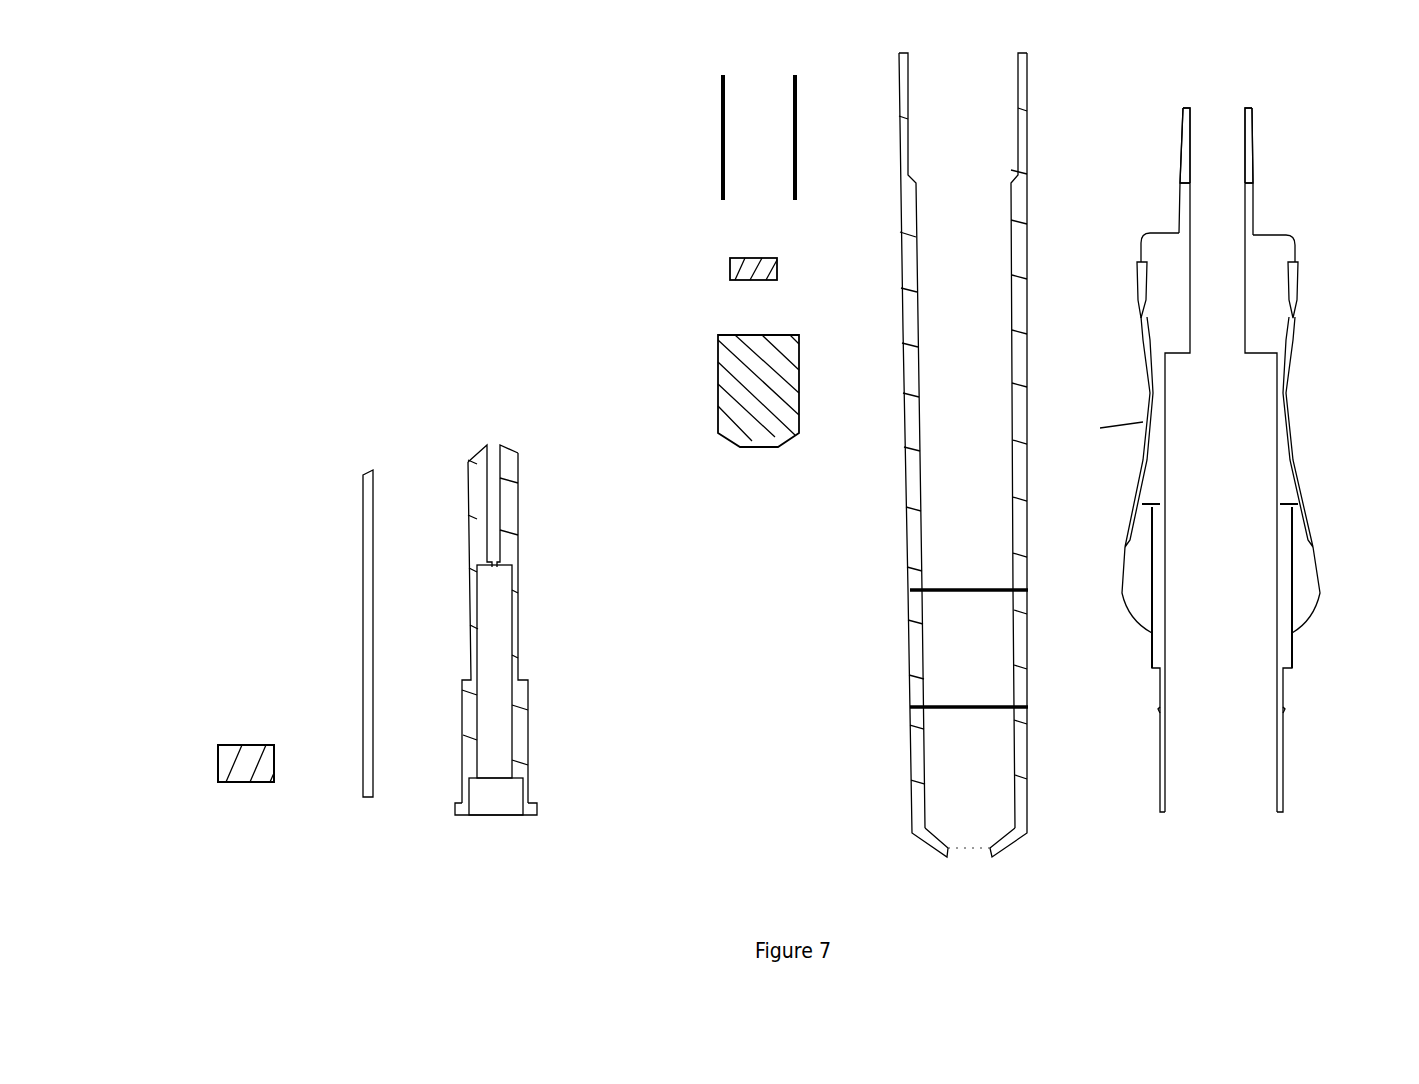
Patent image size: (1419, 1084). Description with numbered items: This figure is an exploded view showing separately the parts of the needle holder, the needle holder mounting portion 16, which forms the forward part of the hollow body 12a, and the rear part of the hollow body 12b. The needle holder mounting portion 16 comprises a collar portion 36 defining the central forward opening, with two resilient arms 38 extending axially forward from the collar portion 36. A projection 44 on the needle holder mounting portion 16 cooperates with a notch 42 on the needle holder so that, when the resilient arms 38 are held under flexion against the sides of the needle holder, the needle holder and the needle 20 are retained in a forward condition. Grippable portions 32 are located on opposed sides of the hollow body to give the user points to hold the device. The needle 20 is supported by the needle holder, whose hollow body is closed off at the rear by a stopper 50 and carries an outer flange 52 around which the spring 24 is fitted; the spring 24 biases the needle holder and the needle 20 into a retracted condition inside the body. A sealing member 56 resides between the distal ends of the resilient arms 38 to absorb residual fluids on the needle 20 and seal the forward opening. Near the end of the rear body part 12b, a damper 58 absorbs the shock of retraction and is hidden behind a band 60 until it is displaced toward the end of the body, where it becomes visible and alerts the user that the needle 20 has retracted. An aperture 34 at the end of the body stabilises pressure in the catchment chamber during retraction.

The forward body part 12a is at (1307, 615).
The rear body part 12b is at (908, 507).
The needle holder mounting portion 16 is at (510, 530).
The needle 20 is at (372, 550).
The spring 24 is at (720, 125).
The grippable portions 32 is at (1302, 442).
The aperture 34 is at (973, 850).
The collar portion 36 is at (1270, 228).
The resilient arms 38 is at (1185, 108).
The notch 42 is at (518, 623).
The projection 44 is at (1243, 294).
The stopper 50 is at (238, 746).
The outer flange 52 is at (525, 808).
The sealing member 56 is at (733, 262).
The damper 58 is at (726, 388).
The band 60 is at (918, 673).